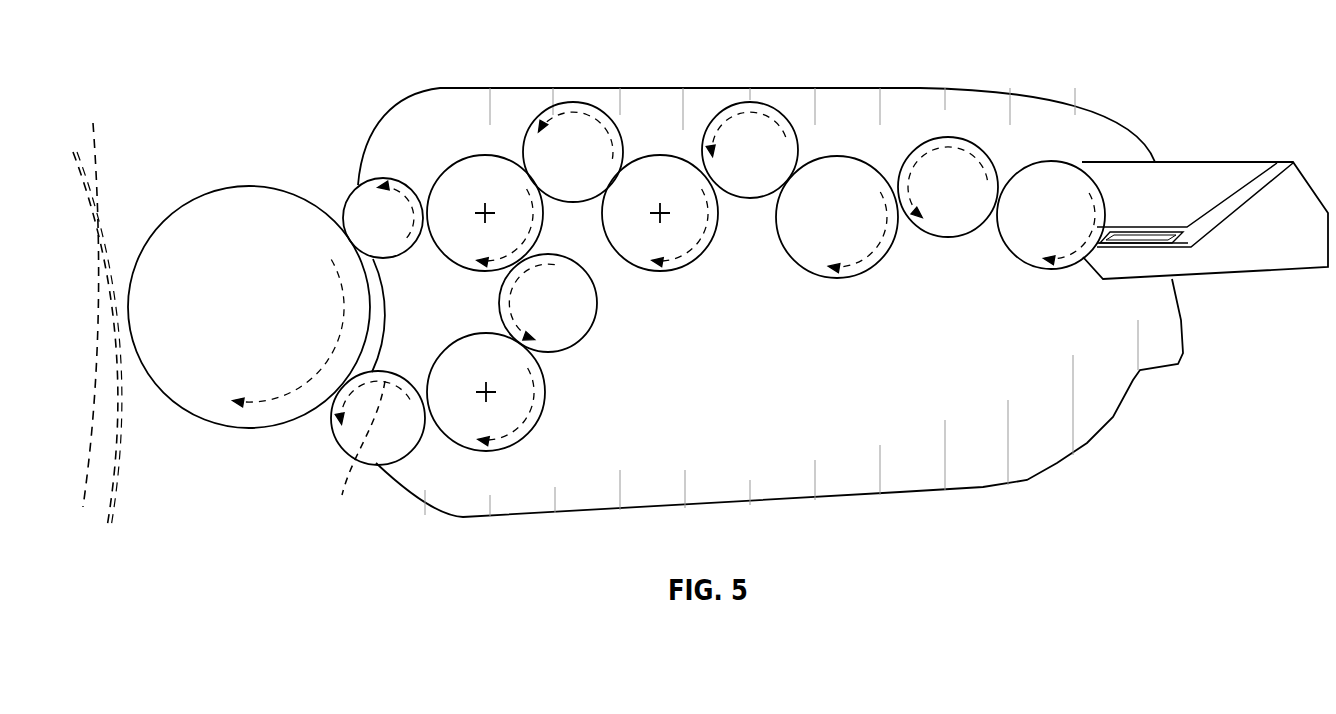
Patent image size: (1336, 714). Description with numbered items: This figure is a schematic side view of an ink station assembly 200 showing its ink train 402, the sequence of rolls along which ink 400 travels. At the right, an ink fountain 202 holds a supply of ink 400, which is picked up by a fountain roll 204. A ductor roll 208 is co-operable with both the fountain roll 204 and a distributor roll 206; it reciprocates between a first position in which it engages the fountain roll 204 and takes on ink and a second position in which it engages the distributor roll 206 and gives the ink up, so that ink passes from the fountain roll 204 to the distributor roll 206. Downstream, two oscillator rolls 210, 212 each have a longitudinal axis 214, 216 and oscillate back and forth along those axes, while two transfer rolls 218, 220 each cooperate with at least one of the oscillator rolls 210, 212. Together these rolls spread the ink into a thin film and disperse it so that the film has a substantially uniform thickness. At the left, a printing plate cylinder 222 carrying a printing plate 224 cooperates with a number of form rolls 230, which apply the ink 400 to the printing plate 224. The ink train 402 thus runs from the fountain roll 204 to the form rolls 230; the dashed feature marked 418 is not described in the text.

The ink station assembly 200 is at (1092, 462).
The ink fountain 202 is at (1173, 162).
The fountain roll 204 is at (1050, 161).
The distributor roll 206 is at (835, 158).
The ductor roll 208 is at (948, 237).
The oscillator roll 210 is at (660, 155).
The oscillator roll 212 is at (458, 157).
The longitudinal axis 214 is at (660, 213).
The longitudinal axis 216 is at (485, 213).
The transfer roll 218 is at (750, 200).
The transfer roll 220 is at (559, 200).
The printing plate cylinder 222 is at (193, 365).
The printing plate 224 is at (227, 430).
The form roll 230 is at (360, 188).
The ink 400 is at (1142, 228).
The ink train 402 is at (567, 102).
The belt seam / flap 418 is at (353, 452).